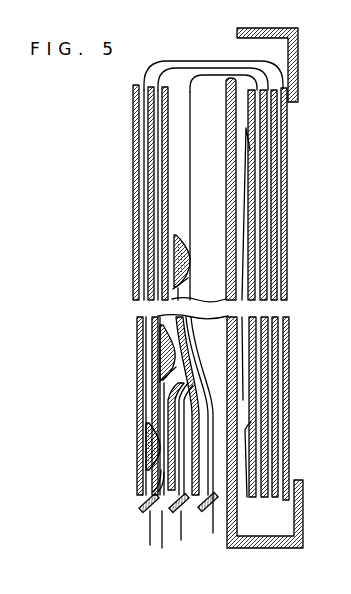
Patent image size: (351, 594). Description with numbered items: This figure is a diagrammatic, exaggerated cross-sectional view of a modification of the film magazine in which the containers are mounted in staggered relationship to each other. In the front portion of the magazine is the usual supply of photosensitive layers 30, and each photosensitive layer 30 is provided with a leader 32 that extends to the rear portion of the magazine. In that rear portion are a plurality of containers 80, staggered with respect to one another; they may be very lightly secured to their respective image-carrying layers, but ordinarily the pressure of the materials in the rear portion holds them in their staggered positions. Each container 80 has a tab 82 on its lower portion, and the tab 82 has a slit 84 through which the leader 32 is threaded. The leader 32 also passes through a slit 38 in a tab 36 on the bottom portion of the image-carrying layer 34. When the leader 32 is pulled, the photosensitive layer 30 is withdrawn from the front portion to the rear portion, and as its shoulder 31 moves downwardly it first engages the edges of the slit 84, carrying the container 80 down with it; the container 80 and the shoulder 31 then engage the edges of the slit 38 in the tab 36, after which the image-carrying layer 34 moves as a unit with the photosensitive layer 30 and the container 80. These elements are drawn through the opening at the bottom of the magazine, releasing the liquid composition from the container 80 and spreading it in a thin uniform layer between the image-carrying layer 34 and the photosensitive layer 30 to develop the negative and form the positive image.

The photosensitive layer 30 is at (265, 237).
The shoulder 31 is at (299, 61).
The leader 32 is at (190, 146).
The image-carrying layer 34 is at (165, 118).
The tab 36 is at (163, 543).
The slit 38 is at (148, 511).
The container 80 is at (147, 415).
The tab 82 is at (137, 500).
The slit 84 is at (158, 484).